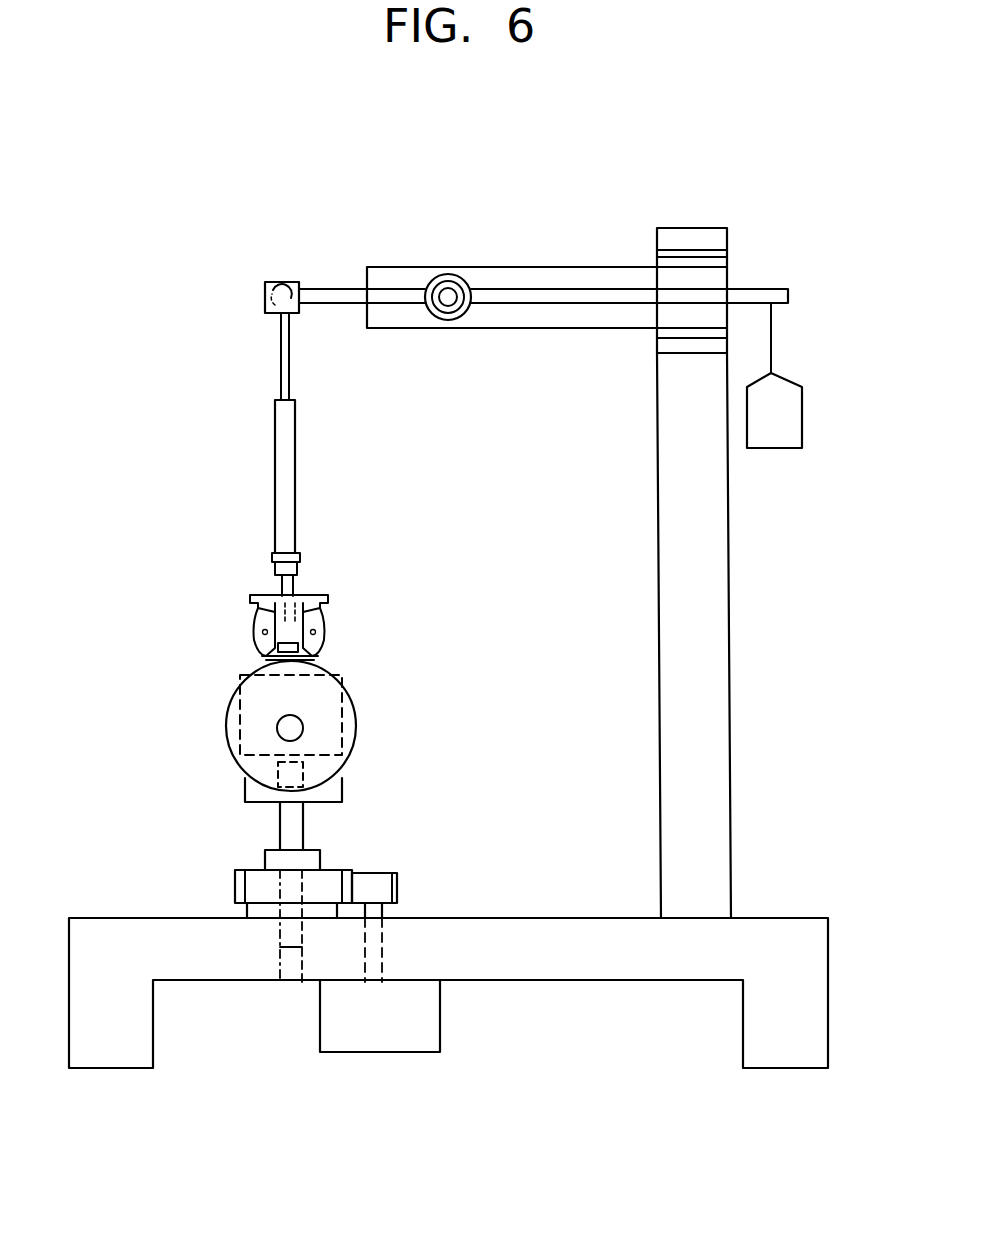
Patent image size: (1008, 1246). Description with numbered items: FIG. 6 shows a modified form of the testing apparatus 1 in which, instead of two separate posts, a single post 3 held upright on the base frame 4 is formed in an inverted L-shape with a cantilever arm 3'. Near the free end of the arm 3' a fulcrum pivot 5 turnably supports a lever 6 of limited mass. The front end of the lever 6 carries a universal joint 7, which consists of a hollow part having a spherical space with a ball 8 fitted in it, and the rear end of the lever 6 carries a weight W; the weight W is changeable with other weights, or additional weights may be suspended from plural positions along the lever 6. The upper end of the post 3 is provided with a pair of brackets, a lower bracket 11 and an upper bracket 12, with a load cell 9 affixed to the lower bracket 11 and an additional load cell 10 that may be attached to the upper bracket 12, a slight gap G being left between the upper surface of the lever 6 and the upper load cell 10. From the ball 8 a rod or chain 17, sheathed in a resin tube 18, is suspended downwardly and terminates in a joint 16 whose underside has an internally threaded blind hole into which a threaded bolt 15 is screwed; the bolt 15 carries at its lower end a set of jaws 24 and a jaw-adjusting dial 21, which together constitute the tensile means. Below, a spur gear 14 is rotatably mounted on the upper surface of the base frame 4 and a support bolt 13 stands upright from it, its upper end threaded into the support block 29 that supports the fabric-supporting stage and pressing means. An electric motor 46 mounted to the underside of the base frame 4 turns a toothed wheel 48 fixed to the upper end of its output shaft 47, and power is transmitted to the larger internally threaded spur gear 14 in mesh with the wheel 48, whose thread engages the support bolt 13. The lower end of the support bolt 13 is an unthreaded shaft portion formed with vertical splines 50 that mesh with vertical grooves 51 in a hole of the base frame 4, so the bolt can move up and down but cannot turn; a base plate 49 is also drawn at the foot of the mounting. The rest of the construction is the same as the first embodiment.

The hardness tester 1 is at (188, 308).
The load cell post 3 is at (744, 635).
The cantilever arm 3' is at (547, 256).
The base frame 4 is at (102, 927).
The fulcrum pivot 5 is at (443, 318).
The lever 6 is at (493, 287).
The universal joint 7 is at (290, 280).
The ball 8 is at (276, 286).
The load cell 9 is at (727, 330).
The additional load cell 10 is at (727, 255).
The lower bracket 11 is at (667, 358).
The upper bracket 12 is at (675, 228).
The support bolt 13 is at (283, 817).
The spur gear 14 is at (247, 888).
The threaded bolt 15 is at (298, 580).
The joint 16 is at (273, 570).
The chain 17 is at (267, 393).
The resin tube 18 is at (263, 457).
The jaw-adjusting dial 21 is at (250, 598).
The jaws 24 is at (257, 630).
The support block 29 is at (247, 778).
The electric motor 46 is at (342, 1045).
The output shaft 47 is at (380, 955).
The toothed wheel 48 is at (370, 872).
The base plate 49 is at (273, 888).
The splines 50 is at (278, 933).
The grooves 51 is at (288, 963).
The gap G is at (657, 262).
The weight W is at (785, 408).